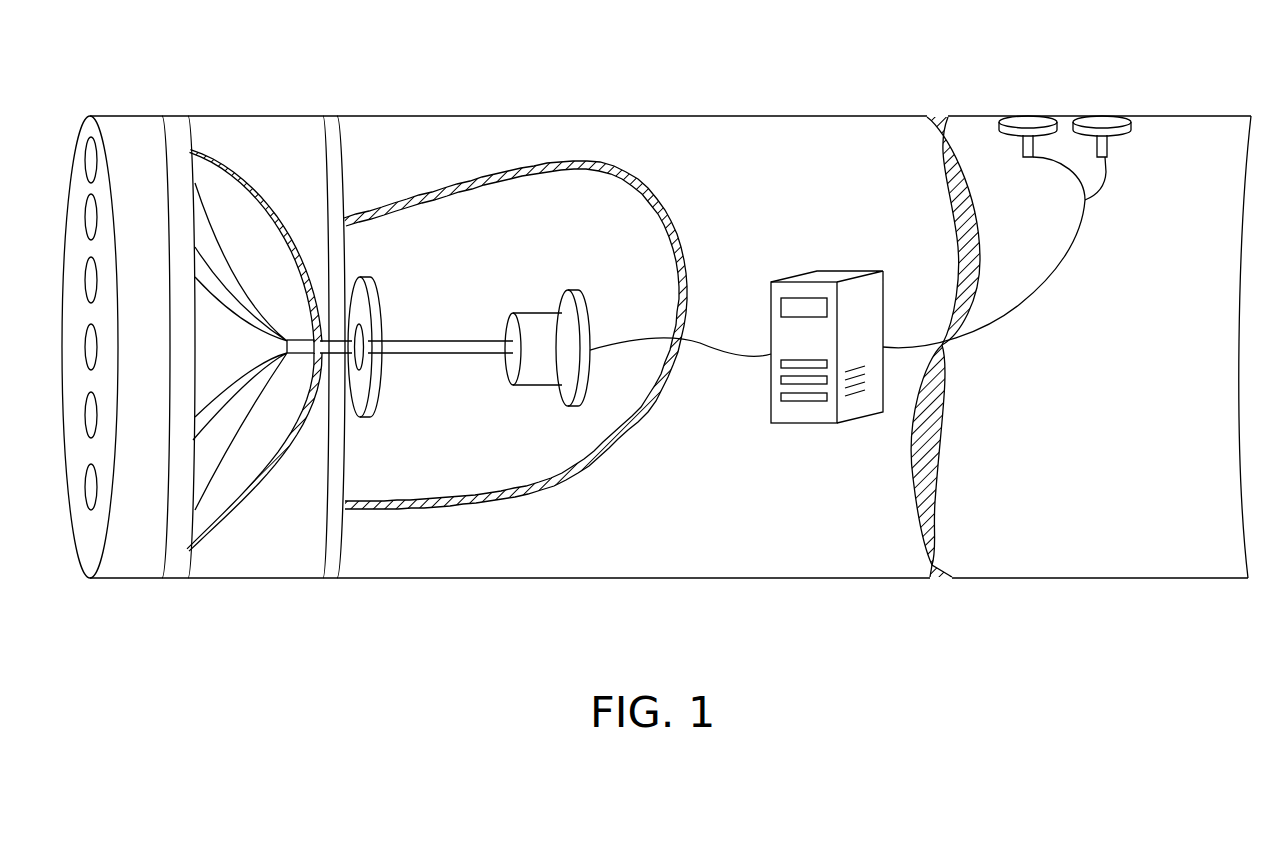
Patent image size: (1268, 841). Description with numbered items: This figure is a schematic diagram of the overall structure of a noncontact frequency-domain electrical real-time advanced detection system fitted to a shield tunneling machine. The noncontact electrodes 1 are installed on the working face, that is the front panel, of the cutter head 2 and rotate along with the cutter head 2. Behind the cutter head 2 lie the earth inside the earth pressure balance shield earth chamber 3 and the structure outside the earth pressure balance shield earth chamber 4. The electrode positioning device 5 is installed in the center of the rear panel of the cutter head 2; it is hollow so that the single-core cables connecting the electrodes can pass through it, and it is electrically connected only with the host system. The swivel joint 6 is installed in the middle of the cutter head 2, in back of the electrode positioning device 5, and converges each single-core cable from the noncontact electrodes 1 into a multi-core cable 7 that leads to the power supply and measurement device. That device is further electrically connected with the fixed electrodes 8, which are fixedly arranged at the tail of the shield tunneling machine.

The noncontact electrode 1 is at (88, 146).
The cutter head 2 is at (180, 168).
The earth inside earth pressure balance shield earth chamber 3 is at (265, 170).
The structure outside earth pressure balance shield earth chamber 4 is at (337, 157).
The electrode positioning device 5 is at (360, 300).
The swivel joint 6 is at (593, 303).
The multi-core cable 7 is at (683, 333).
The fixed electrode 8 is at (1032, 117).